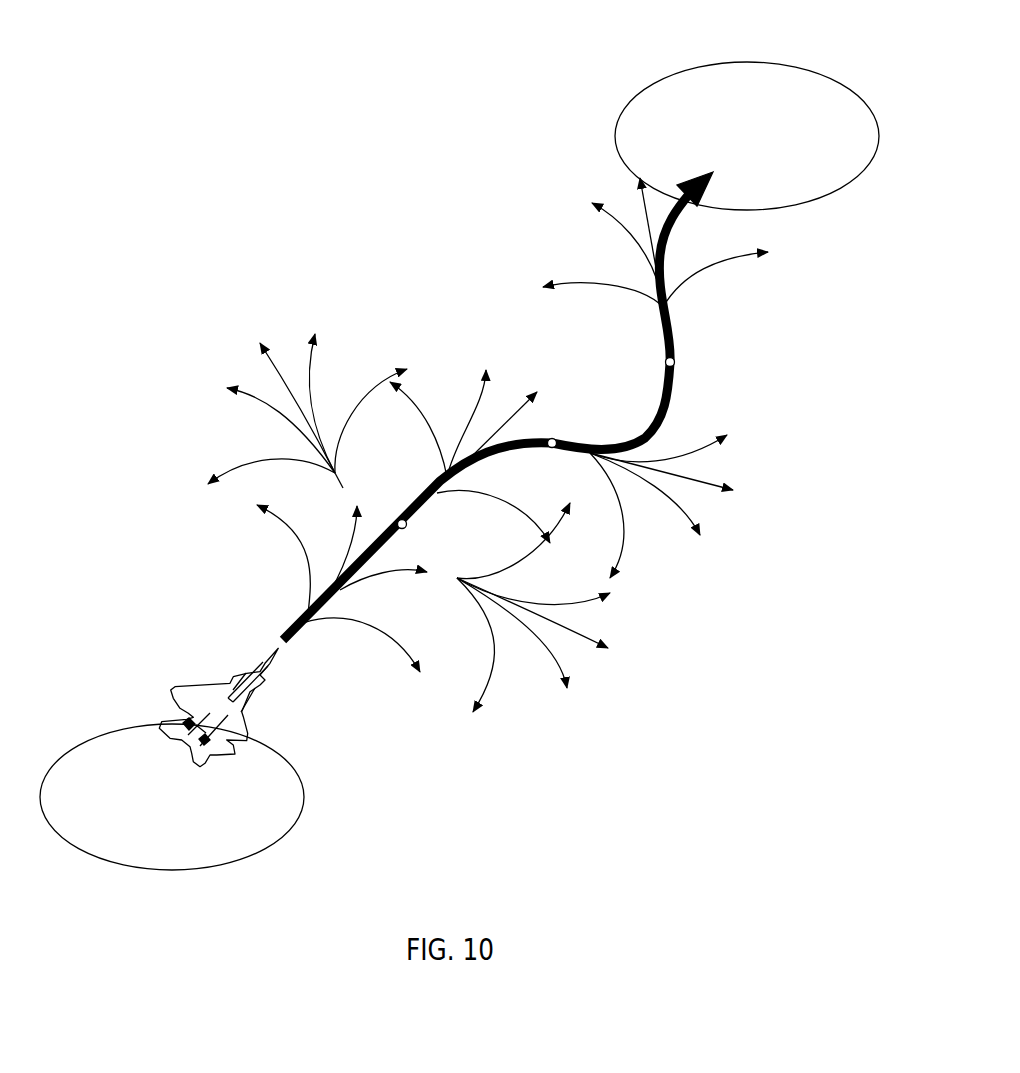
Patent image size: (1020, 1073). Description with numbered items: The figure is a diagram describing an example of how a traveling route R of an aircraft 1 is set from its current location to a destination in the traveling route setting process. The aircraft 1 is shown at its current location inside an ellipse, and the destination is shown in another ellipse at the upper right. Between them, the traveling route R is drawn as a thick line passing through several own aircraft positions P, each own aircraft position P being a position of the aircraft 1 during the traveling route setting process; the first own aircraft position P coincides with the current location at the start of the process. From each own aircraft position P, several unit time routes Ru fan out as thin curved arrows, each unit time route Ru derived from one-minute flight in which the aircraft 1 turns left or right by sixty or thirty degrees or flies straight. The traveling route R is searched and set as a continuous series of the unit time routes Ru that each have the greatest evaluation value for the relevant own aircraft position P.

The aircraft 1 is at (177, 683).
The traveling route R is at (675, 392).
The own aircraft position P is at (399, 521).
The unit time route Ru is at (230, 427).